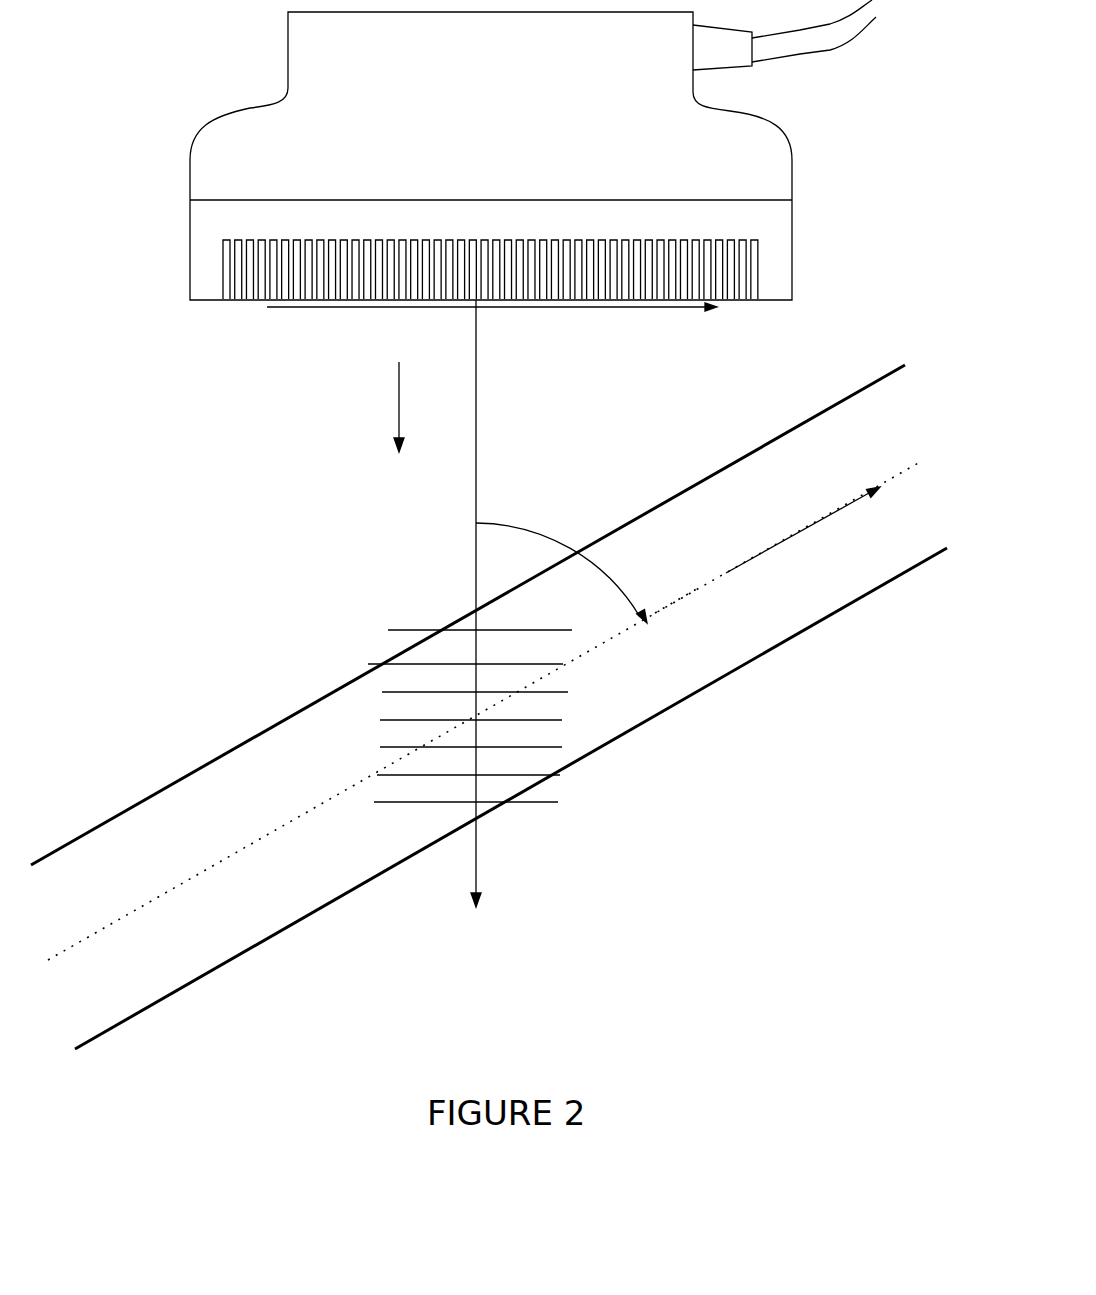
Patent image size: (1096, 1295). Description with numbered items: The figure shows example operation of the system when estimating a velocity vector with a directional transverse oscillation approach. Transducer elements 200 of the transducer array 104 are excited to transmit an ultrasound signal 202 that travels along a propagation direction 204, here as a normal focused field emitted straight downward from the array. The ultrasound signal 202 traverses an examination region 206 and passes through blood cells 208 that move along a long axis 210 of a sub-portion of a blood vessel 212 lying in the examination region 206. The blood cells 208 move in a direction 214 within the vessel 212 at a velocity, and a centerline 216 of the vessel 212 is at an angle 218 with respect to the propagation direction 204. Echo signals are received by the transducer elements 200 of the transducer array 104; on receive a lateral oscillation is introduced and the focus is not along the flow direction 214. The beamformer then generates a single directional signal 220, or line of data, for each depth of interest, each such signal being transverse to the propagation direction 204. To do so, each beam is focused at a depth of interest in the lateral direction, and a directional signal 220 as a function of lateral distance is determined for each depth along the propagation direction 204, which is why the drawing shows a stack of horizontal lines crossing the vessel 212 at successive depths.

The transducer array 104 is at (190, 217).
The transducer elements 200 is at (208, 254).
The ultrasound signal 202 is at (477, 400).
The propagation direction 204 is at (399, 400).
The examination region 206 is at (192, 467).
The blood cells 208 is at (172, 810).
The long axis 210 is at (182, 885).
The blood vessel 212 is at (655, 718).
The direction 214 is at (790, 538).
The centerline 216 is at (673, 605).
The angle 218 is at (483, 528).
The directional signal 220 is at (438, 683).